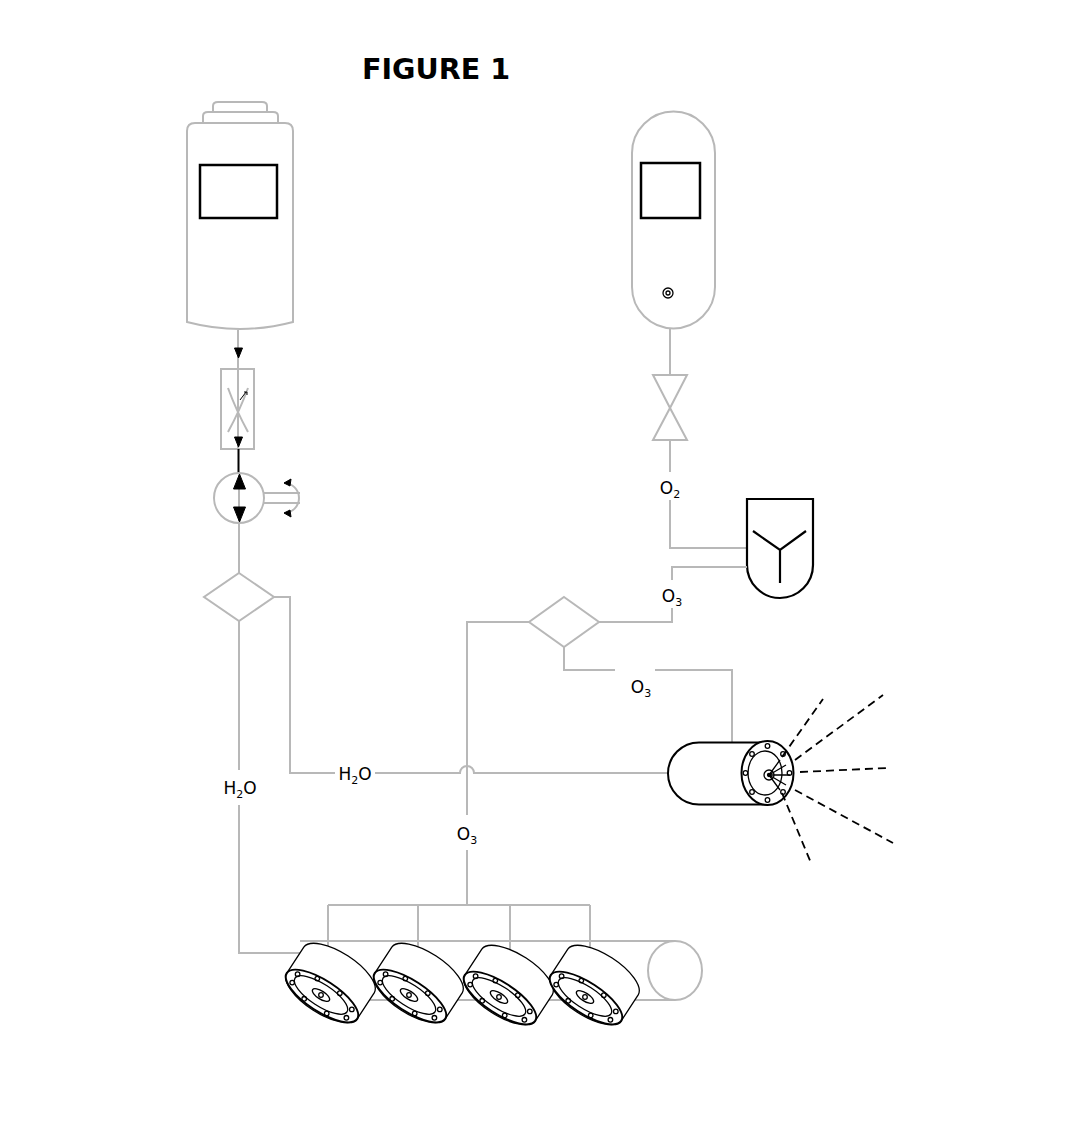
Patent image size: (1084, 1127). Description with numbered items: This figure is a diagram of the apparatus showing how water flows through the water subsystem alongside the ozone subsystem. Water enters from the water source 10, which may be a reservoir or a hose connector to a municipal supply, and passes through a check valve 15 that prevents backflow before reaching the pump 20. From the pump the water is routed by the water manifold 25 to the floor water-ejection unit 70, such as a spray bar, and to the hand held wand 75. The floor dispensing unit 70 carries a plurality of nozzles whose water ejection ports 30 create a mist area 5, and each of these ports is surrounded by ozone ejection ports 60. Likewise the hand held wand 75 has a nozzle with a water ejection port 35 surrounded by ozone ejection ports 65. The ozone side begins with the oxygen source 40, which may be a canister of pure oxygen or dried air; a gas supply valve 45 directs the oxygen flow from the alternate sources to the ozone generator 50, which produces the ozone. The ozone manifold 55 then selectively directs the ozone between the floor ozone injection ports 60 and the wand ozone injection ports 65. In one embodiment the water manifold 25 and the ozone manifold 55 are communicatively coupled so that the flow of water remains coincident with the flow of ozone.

The mist area 5 is at (880, 682).
The water source 10 is at (293, 275).
The check valve 15 is at (220, 410).
The pump 20 is at (250, 482).
The water manifold 25 is at (204, 597).
The water ejection ports 30 is at (441, 1020).
The water ejection port 35 is at (775, 791).
The oxygen source 40 is at (631, 275).
The gas supply valve 45 is at (670, 408).
The ozone generator 50 is at (813, 548).
The ozone manifold 55 is at (550, 610).
The ozone ejection ports 60 is at (352, 1015).
The ozone ejection ports 65 is at (771, 746).
The floor water-ejection unit 70 is at (700, 975).
The hand held wand 75 is at (728, 778).